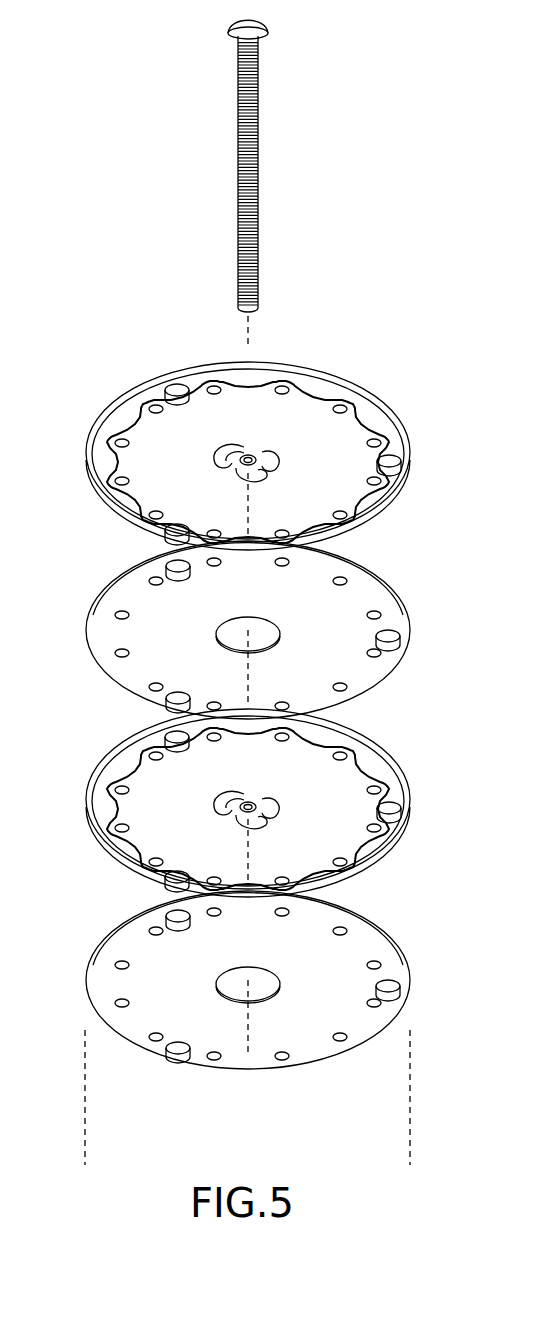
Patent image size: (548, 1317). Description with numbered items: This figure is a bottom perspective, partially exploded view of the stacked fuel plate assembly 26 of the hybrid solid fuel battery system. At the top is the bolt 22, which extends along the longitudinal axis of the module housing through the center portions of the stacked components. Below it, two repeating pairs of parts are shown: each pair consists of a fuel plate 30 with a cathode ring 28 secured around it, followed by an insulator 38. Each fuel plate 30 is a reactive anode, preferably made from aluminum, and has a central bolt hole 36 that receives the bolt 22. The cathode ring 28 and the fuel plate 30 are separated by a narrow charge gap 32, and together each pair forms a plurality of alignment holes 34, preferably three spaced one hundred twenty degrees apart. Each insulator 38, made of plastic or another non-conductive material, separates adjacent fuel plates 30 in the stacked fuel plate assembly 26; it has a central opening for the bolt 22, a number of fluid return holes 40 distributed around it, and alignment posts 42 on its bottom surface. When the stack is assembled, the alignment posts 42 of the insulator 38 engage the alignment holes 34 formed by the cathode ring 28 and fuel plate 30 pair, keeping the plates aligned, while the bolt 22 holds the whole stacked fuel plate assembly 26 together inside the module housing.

The bolt 22 is at (258, 140).
The stacked fuel plate assembly 26 is at (366, 347).
The cathode ring 28 is at (202, 363).
The fuel plate 30 is at (118, 462).
The charge gap 32 is at (390, 428).
The alignment holes 34 is at (168, 390).
The bolt hole 36 is at (236, 457).
The insulator 38 is at (386, 582).
The fluid return holes 40 is at (115, 617).
The alignment posts 42 is at (179, 574).